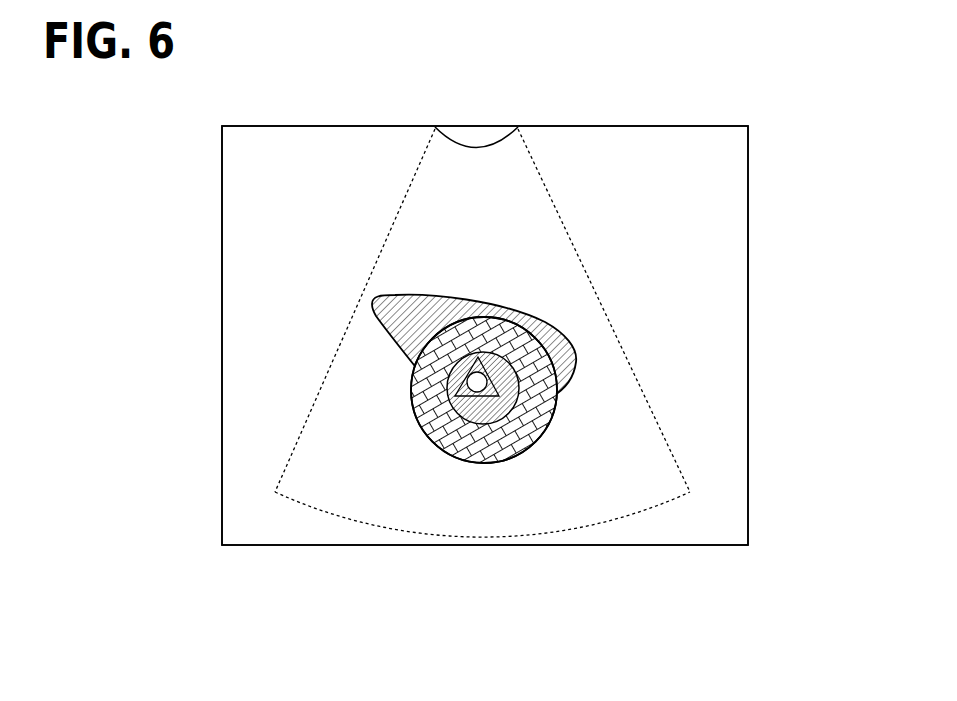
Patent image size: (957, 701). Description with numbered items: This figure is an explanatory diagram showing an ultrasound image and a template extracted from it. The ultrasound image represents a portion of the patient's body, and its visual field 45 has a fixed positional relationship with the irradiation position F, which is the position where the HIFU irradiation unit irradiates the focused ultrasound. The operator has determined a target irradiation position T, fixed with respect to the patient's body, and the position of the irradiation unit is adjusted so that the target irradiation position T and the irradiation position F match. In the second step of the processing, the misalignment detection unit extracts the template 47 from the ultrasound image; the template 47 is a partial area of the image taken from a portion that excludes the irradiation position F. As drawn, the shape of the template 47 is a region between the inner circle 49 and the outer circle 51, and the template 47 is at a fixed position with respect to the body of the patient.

The visual field 45 is at (660, 156).
The template 47 is at (411, 400).
The inner circle 49 is at (549, 323).
The outer circle 51 is at (557, 416).
The target irradiation position T is at (470, 423).
The irradiation position F is at (507, 423).